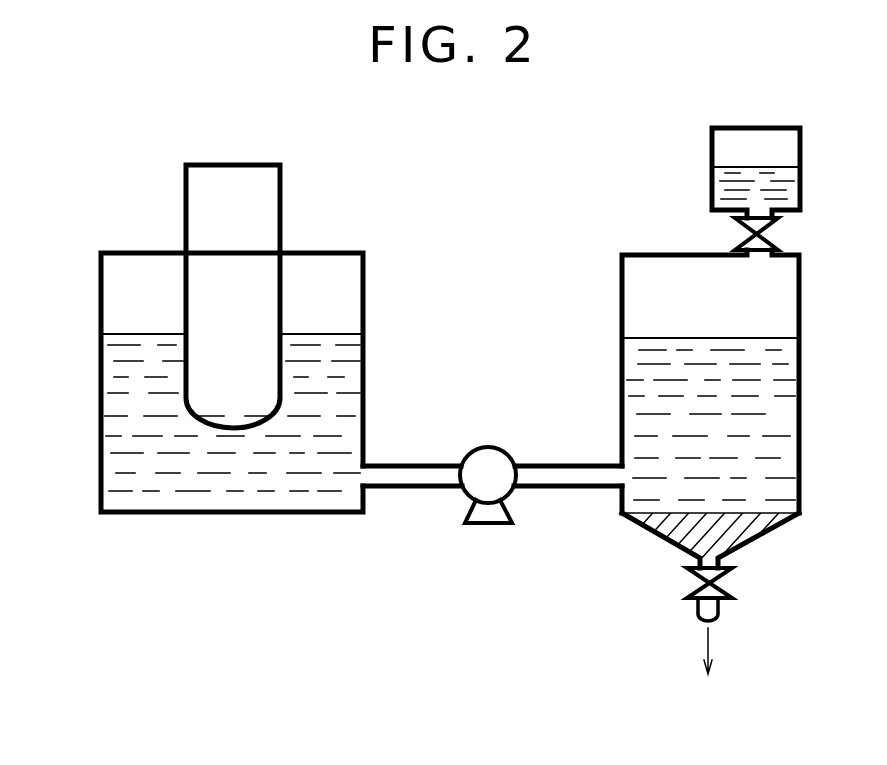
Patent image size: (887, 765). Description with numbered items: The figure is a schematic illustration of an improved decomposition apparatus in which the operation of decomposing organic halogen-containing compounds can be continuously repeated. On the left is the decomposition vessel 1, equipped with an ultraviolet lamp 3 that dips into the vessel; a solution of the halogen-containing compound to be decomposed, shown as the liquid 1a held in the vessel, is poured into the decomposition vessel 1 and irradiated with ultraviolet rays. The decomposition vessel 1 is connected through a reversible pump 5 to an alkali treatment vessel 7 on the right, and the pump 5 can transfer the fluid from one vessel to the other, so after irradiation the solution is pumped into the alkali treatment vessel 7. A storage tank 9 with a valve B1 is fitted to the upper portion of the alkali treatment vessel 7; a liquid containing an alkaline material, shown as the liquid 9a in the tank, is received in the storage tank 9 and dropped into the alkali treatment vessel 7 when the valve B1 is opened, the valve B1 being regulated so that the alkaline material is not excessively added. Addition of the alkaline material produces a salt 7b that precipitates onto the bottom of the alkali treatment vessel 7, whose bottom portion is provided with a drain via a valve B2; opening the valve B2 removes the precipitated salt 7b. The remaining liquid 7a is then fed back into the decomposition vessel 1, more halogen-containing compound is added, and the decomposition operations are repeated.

The decomposition vessel 1 is at (99, 283).
The treatment liquid in bath tank 1a is at (107, 432).
The ultraviolet lamp 3 is at (283, 168).
The reversible pump 5 is at (468, 500).
The alkali treatment vessel 7 is at (801, 357).
The remaining liquid 7a is at (790, 428).
The salt 7b is at (772, 524).
The storage tank 9 is at (803, 134).
The liquid in supply tank 9a is at (791, 181).
The valve B1 is at (778, 236).
The valve B2 is at (735, 578).